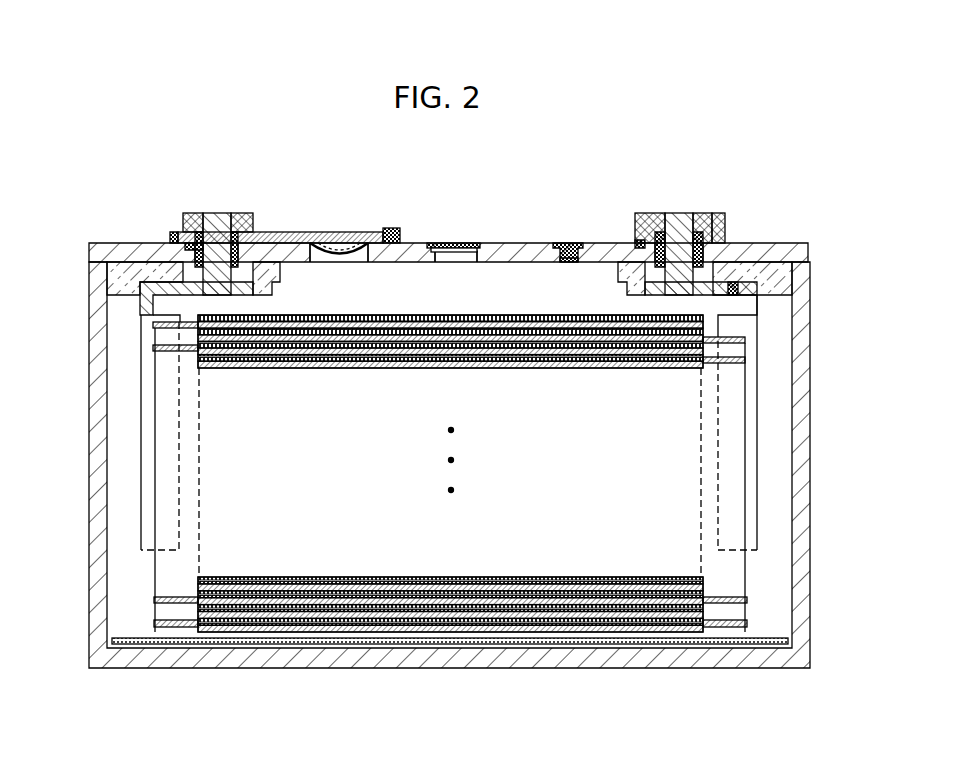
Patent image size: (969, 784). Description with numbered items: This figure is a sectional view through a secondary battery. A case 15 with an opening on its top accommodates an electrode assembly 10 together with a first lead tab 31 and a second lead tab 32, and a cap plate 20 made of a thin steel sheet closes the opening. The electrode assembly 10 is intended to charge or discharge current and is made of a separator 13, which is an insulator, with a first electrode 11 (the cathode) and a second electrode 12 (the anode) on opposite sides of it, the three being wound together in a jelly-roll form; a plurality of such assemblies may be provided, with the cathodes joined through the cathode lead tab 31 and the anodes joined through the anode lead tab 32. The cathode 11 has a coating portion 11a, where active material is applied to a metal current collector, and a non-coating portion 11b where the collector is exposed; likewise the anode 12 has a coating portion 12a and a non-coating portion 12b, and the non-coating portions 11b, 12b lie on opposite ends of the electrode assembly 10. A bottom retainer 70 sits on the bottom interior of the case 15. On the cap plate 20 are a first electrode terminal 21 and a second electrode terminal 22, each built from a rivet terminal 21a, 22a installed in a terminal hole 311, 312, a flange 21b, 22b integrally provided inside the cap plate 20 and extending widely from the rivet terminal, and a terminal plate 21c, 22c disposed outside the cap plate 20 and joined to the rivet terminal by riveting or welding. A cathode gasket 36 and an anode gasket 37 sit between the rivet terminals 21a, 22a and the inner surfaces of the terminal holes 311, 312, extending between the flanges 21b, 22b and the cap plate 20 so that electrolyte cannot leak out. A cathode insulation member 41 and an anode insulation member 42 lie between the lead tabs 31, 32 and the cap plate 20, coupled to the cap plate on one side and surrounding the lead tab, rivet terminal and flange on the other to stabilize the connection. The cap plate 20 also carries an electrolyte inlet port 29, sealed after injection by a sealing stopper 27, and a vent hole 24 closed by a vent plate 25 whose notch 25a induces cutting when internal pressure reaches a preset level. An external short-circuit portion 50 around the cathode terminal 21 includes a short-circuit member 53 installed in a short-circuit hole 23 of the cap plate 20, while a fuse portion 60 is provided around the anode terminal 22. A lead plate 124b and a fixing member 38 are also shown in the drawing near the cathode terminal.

The electrode assembly 10 is at (450, 519).
The first electrode 11 is at (224, 539).
The coating portion 11a is at (158, 730).
The non-coating portion 11b is at (178, 603).
The second electrode 12 is at (678, 546).
The coating portion 12a is at (633, 603).
The non-coating portion 12b is at (725, 540).
The separator 13 is at (452, 618).
The case 15 is at (810, 432).
The cap plate 20 is at (520, 243).
The first electrode terminal 21 is at (218, 212).
The rivet terminal 21a is at (213, 287).
The flange 21b is at (262, 243).
The terminal plate 21c is at (193, 213).
The second electrode terminal 22 is at (683, 210).
The rivet terminal 22a is at (675, 222).
The flange 22b is at (645, 262).
The terminal plate 22c is at (726, 228).
The short-circuit hole 23 is at (358, 262).
The vent hole 24 is at (462, 262).
The vent plate 25 is at (478, 249).
The notch 25a is at (458, 243).
The sealing stopper 27 is at (568, 243).
The electrolyte inlet port 29 is at (562, 262).
The first lead tab 31 is at (146, 468).
The second lead tab 32 is at (754, 468).
The cathode gasket 36 is at (197, 253).
The anode gasket 37 is at (650, 213).
The fixing member 38 is at (393, 228).
The cathode insulation member 41 is at (110, 282).
The anode insulation member 42 is at (781, 284).
The external short-circuit portion 50 is at (339, 231).
The short-circuit member 53 is at (335, 256).
The fuse portion 60 is at (738, 298).
The bottom retainer 70 is at (776, 645).
The lead plate 124b is at (300, 232).
The terminal hole 311 is at (242, 232).
The terminal hole 312 is at (705, 213).